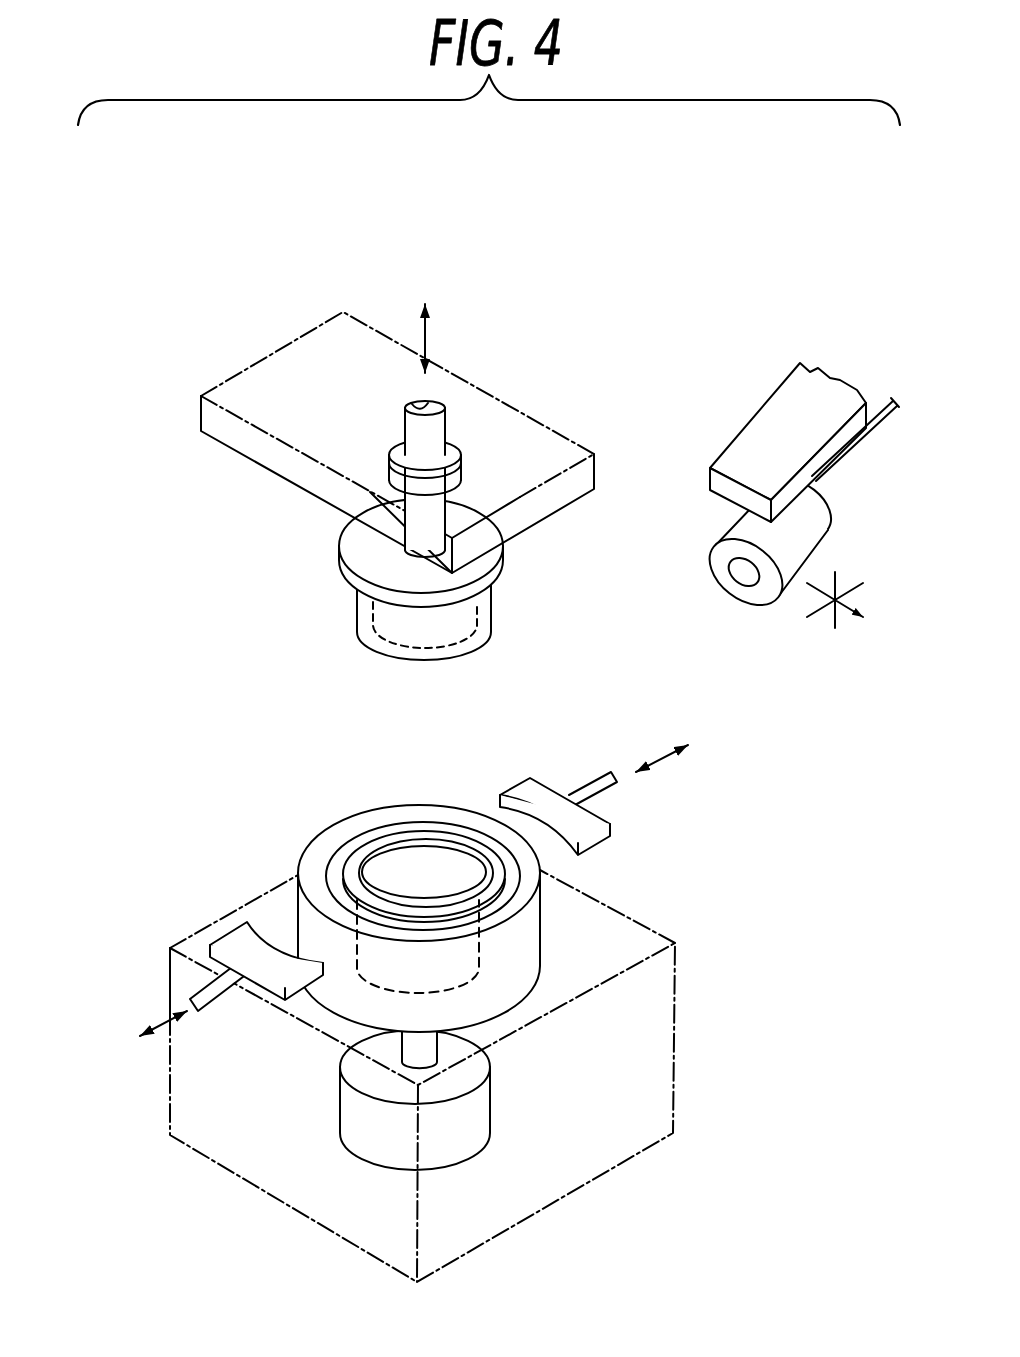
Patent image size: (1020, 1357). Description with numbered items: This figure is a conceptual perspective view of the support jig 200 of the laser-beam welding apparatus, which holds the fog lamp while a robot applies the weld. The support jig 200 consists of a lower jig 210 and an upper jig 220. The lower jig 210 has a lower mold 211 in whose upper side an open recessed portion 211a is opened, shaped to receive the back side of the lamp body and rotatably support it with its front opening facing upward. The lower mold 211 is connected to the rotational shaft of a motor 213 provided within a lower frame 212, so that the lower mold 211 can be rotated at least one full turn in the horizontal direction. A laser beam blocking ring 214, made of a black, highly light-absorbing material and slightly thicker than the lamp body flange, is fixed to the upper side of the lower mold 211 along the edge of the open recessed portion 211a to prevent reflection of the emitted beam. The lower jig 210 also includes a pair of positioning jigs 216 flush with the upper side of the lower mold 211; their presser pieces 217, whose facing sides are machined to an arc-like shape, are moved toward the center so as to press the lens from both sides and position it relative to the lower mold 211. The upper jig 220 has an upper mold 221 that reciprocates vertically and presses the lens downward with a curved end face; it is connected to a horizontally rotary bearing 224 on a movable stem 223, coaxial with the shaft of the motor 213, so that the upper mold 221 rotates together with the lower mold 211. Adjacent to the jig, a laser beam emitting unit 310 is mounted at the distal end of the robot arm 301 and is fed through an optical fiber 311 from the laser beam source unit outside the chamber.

The support jig 200 is at (402, 425).
The upper jig 220 is at (499, 417).
The upper mold 221 is at (487, 627).
The movable stem 223 is at (472, 404).
The horizontally rotary bearing 224 is at (461, 468).
The arm 301 is at (781, 413).
The laser beam emitting unit 310 is at (788, 568).
The optical fiber 311 is at (861, 441).
The lower jig 210 is at (429, 1003).
The lower mold 211 is at (474, 893).
The open recessed portion 211a is at (413, 860).
The lower frame 212 is at (650, 1118).
The motor 213 is at (452, 1153).
The laser beam blocking ring 214 is at (337, 862).
The positioning jigs 216 is at (167, 972).
The presser pieces 217 is at (238, 938).